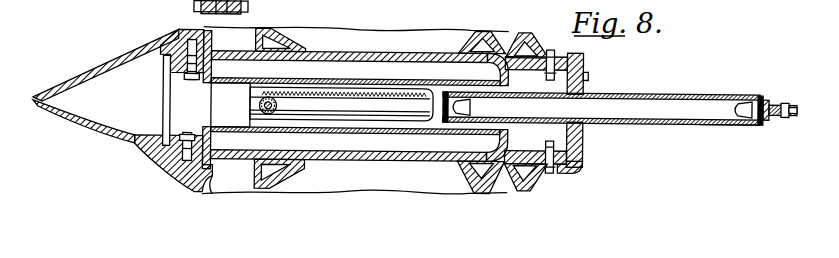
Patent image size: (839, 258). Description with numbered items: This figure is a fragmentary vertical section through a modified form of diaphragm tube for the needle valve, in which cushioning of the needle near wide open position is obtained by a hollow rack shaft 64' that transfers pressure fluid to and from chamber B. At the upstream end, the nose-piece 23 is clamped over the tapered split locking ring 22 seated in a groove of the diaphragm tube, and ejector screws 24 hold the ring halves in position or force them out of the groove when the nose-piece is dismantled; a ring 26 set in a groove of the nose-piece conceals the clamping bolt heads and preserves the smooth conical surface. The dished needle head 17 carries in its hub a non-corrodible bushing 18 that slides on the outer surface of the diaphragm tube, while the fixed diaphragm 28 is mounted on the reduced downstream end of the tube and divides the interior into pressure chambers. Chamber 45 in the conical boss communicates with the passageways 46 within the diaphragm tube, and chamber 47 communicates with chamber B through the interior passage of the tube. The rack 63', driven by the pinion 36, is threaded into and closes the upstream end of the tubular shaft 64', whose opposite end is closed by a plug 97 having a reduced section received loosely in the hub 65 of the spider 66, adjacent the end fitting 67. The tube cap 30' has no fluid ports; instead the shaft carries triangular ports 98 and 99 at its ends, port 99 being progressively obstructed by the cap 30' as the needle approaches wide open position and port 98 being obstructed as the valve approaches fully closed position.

The nose-piece 23 is at (84, 89).
The ring 26 is at (144, 68).
The split locking ring 22 is at (183, 56).
The ejector screws 24 is at (186, 80).
The chamber 45 is at (183, 164).
The passageways 46 is at (355, 101).
The chamber 47 is at (287, 180).
The needle head 17 is at (463, 183).
The non-corrodible bushing 18 is at (491, 166).
The tube cap 30' is at (557, 64).
The fixed diaphragm 28 is at (528, 187).
The rack 63' is at (341, 104).
The gear 36 is at (277, 106).
The hollow rack shaft 64' is at (601, 98).
The port 98 is at (471, 107).
The port 99 is at (728, 124).
The plug 97 is at (746, 124).
The hub 65 is at (773, 123).
The spider 66 is at (783, 104).
The end cap 67 is at (790, 117).